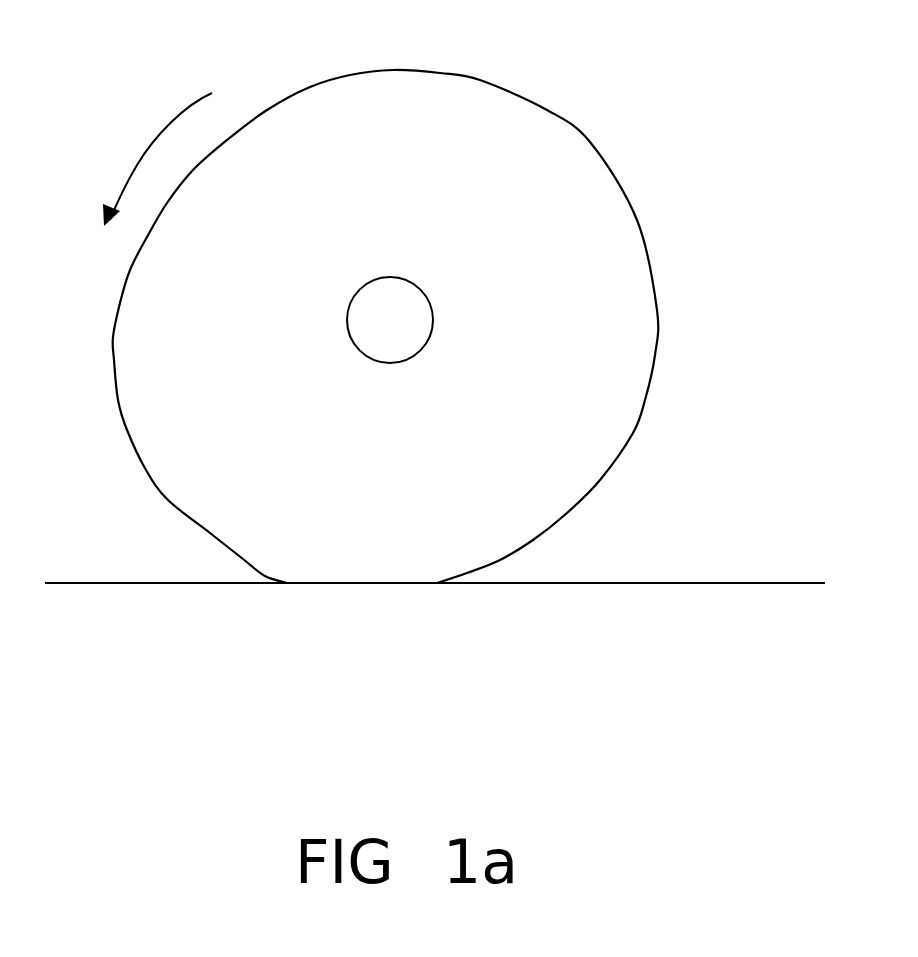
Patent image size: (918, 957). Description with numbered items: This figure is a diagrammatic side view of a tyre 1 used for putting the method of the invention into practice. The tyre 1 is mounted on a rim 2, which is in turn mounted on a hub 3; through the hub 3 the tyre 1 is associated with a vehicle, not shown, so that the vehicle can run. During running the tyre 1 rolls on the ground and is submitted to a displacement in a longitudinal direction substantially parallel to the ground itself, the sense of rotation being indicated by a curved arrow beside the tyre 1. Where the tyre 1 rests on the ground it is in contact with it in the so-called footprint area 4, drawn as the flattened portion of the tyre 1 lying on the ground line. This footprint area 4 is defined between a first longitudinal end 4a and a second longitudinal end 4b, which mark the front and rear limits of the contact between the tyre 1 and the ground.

The tyre 1 is at (448, 308).
The rim 2 is at (592, 325).
The hub 3 is at (393, 313).
The footprint area 4 is at (362, 584).
The first longitudinal end 4a is at (293, 584).
The second longitudinal end 4b is at (435, 584).